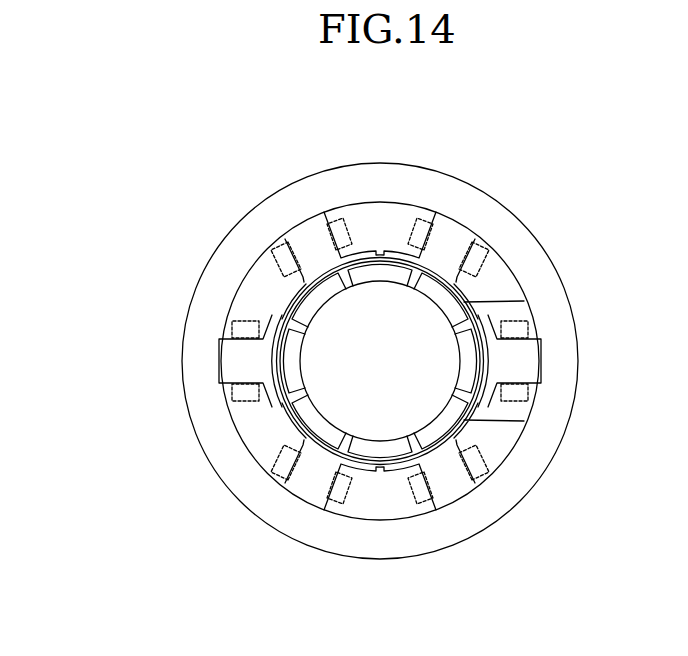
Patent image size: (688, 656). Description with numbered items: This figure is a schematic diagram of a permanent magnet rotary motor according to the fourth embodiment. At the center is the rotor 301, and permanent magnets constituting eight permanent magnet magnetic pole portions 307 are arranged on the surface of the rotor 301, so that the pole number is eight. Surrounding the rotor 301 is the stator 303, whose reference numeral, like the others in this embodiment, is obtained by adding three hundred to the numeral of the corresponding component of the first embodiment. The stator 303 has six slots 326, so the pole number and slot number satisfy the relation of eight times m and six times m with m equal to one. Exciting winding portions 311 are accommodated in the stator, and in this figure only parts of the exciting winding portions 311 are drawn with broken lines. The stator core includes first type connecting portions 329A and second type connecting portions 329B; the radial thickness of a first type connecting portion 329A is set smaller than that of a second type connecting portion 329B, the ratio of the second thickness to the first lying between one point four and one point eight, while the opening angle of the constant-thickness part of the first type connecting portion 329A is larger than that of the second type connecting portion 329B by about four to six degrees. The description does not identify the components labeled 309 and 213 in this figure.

The rotor 301 is at (468, 348).
The stator 303 is at (509, 197).
The permanent magnet magnetic pole portions 307 is at (356, 276).
The stator yoke 309 is at (456, 228).
The exciting winding portions 311 is at (276, 238).
The rotor core 213 is at (492, 277).
The slots 326 is at (356, 216).
The first type connecting portion 329A is at (283, 309).
The second type connecting portion 329B is at (379, 248).